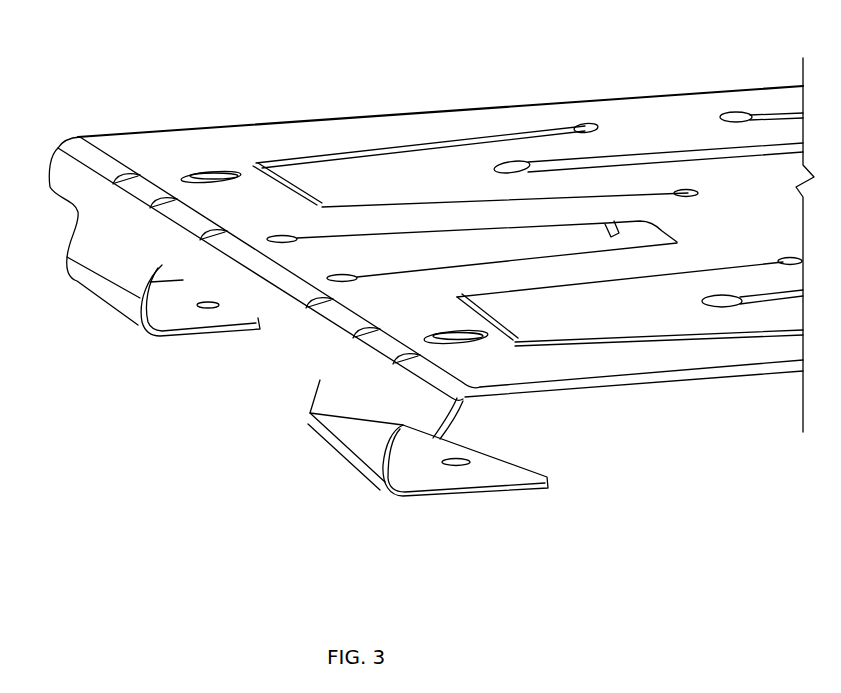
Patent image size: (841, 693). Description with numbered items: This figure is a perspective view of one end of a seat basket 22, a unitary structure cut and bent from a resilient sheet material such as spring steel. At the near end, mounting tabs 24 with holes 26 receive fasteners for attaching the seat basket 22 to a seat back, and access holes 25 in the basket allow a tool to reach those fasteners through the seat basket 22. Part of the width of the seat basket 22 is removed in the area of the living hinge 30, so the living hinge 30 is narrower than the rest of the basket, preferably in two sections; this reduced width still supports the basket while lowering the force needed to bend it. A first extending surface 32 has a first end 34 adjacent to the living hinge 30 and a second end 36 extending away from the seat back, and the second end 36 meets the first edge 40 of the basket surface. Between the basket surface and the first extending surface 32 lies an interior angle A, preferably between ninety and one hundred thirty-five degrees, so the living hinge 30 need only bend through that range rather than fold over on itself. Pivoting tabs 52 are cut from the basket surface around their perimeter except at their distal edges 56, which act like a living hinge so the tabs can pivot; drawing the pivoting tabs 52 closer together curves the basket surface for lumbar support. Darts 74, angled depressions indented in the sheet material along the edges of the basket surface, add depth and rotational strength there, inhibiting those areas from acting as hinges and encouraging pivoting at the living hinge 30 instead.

The seat basket 22 is at (620, 368).
The mounting tabs 24 is at (187, 335).
The access holes 25 is at (215, 172).
The holes 26 is at (208, 308).
The living hinge 30 is at (100, 290).
The first extending surface 32 is at (312, 393).
The first end 34 is at (310, 422).
The second end 36 is at (58, 150).
The first edge 40 is at (92, 136).
The pivoting tabs 52 is at (460, 248).
The distal edges 56 is at (310, 263).
The darts 74 is at (203, 236).
The interior angle A is at (433, 438).